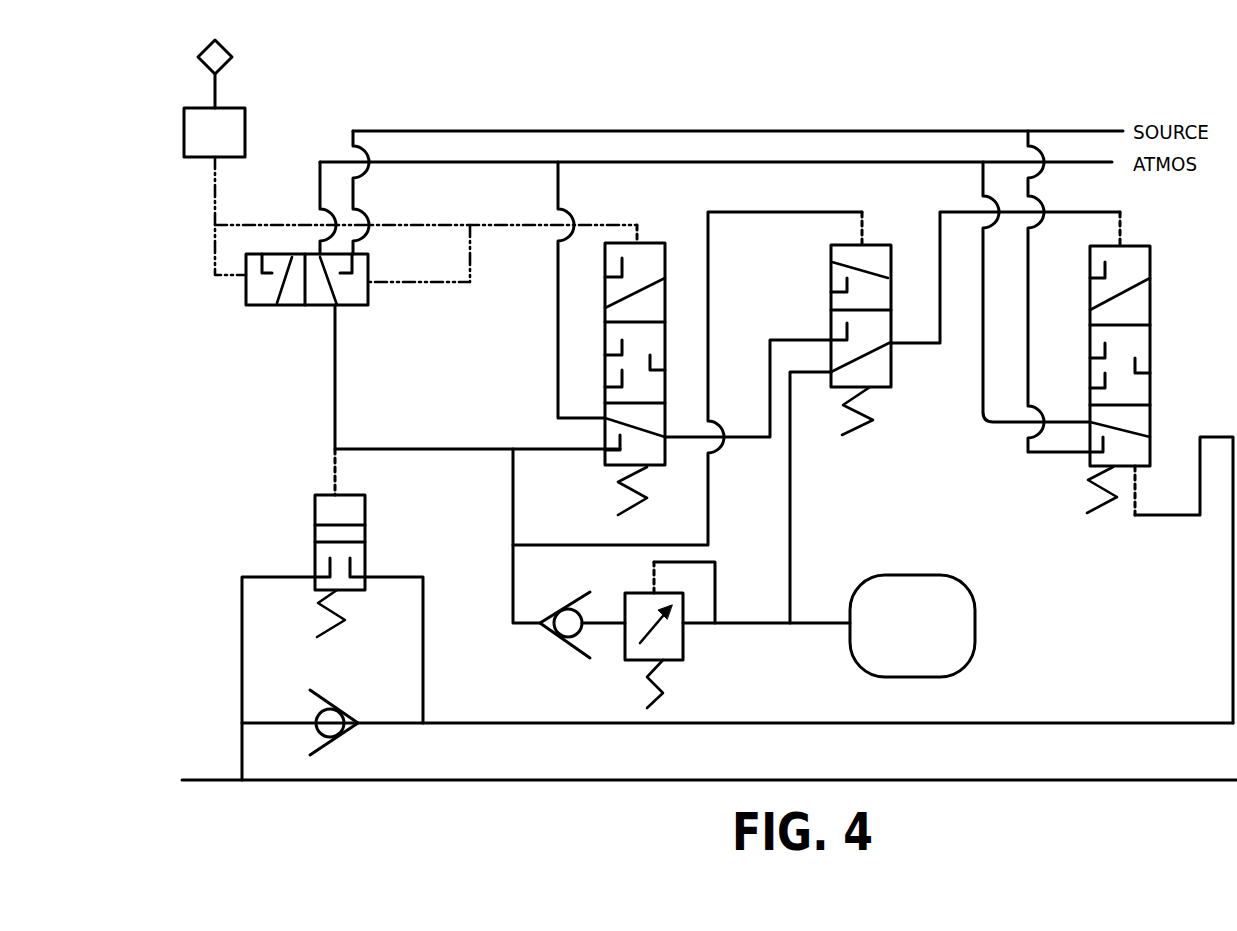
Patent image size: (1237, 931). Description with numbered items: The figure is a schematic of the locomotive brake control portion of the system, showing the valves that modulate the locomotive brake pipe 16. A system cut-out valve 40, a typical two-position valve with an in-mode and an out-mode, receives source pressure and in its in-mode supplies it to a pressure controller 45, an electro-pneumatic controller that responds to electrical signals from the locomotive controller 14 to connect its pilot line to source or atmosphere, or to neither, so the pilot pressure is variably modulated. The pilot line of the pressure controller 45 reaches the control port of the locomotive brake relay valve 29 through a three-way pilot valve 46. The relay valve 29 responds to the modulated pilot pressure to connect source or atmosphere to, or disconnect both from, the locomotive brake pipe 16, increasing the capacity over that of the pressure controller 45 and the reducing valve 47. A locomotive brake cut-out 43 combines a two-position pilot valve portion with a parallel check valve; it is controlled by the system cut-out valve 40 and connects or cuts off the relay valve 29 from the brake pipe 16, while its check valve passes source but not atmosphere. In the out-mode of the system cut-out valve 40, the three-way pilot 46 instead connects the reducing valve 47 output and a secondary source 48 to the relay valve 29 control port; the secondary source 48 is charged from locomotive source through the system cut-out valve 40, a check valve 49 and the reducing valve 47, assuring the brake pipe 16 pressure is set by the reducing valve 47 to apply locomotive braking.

The locomotive controller 14 is at (214, 98).
The system cut-out valve 40 is at (245, 289).
The locomotive brake cut-out 43 is at (313, 510).
The pressure controller 45 is at (650, 242).
The three-way pilot valve 46 is at (830, 272).
The reducing valve 47 is at (673, 641).
The secondary source 48 is at (912, 626).
The check valve 49 is at (556, 619).
The locomotive brake relay valve 29 is at (1152, 263).
The locomotive brake pipe 16 is at (709, 767).